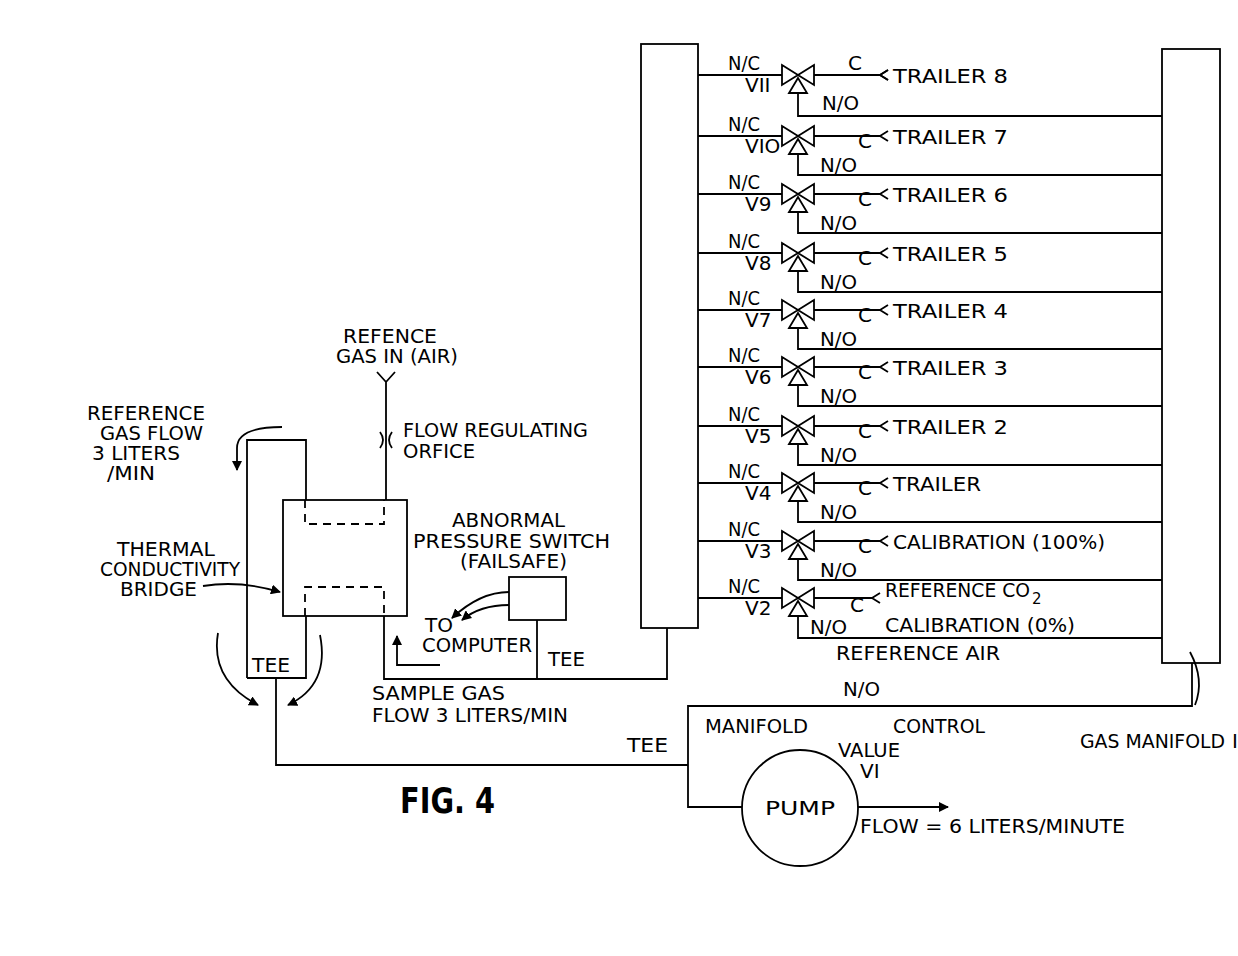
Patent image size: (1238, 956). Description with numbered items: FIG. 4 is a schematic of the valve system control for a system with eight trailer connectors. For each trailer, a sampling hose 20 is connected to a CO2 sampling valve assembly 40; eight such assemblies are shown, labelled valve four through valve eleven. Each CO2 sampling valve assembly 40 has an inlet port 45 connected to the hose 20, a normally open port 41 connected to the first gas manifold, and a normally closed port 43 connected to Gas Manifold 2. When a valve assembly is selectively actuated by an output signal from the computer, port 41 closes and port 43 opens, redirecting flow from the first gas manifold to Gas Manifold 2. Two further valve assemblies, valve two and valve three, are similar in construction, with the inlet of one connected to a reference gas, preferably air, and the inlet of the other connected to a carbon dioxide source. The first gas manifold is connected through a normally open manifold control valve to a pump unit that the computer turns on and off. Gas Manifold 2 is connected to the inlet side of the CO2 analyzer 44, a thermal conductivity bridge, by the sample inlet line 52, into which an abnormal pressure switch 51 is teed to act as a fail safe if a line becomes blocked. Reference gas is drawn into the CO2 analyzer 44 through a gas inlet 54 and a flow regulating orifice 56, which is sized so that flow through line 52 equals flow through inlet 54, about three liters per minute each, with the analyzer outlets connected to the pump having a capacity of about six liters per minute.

The gas manifold 2 is at (660, 210).
The sampling hose 20 is at (866, 70).
The CO2 sampling valve assembly 40 is at (800, 62).
The normally open port 41 is at (790, 98).
The normally closed port 43 is at (780, 67).
The inlet port 45 is at (815, 70).
The CO2 analyzer 44 is at (366, 499).
The abnormal pressure switch 51 is at (566, 597).
The sample inlet line 52 is at (668, 655).
The gas inlet 54 is at (390, 392).
The flow regulating orifice 56 is at (378, 441).